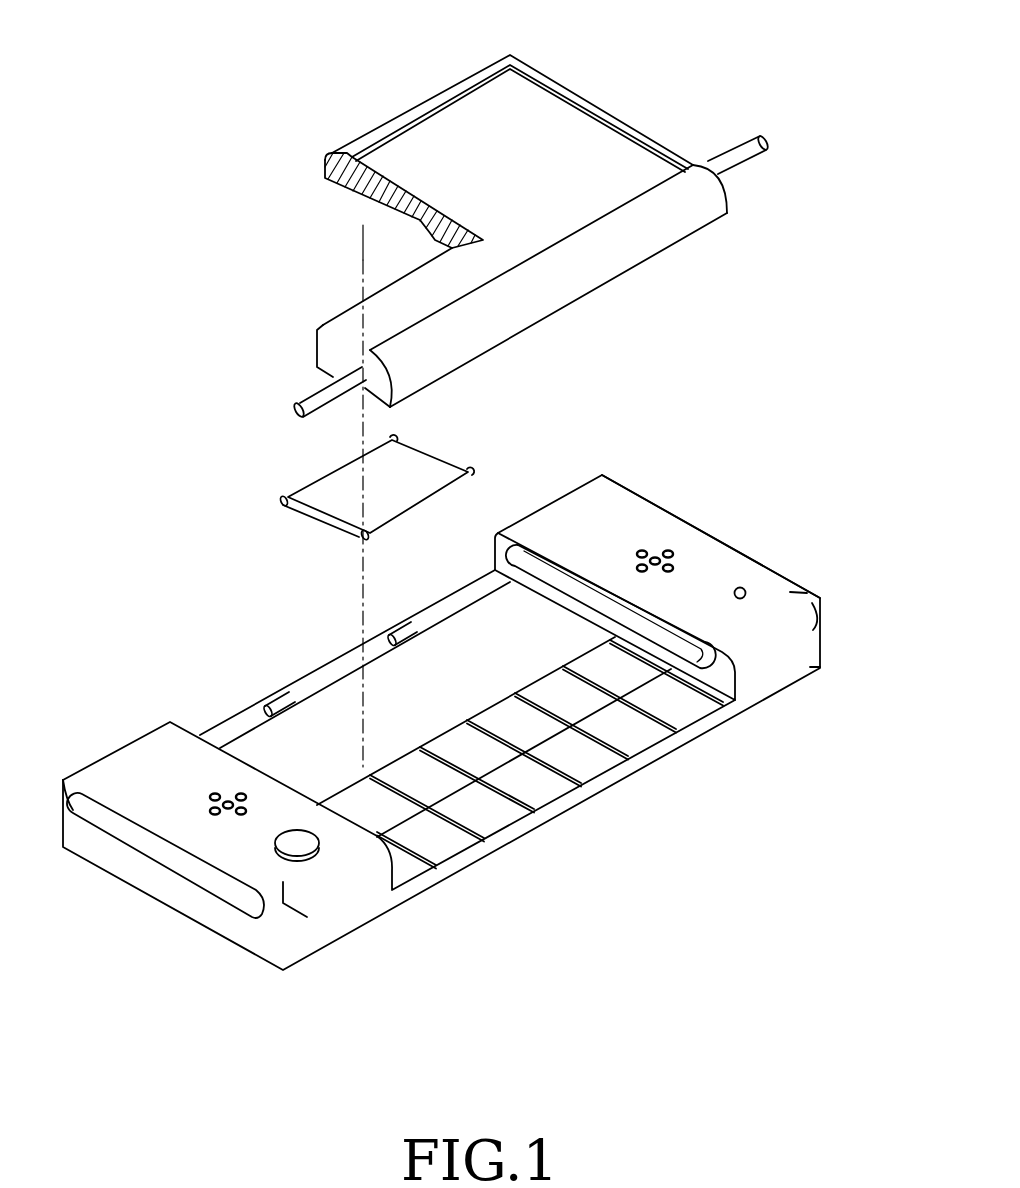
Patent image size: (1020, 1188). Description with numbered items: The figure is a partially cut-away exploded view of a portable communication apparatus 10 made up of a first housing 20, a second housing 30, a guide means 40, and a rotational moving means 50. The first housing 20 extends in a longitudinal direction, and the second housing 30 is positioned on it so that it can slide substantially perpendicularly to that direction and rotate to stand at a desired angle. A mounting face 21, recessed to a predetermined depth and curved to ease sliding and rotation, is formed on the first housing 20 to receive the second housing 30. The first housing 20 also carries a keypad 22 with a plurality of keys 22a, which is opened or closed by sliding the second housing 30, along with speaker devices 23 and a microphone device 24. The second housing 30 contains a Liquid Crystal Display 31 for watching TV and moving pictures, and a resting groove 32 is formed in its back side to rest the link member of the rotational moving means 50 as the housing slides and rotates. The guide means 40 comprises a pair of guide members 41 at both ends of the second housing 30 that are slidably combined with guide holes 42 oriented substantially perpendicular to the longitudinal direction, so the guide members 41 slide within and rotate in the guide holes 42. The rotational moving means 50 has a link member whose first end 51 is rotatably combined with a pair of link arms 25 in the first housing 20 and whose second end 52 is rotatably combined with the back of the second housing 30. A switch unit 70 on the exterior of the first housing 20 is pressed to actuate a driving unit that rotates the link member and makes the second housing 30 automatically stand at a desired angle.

The portable communication apparatus 10 is at (172, 93).
The first housing 20 is at (133, 899).
The mounting face 21 is at (265, 746).
The keypad 22 is at (418, 908).
The keys 22a is at (695, 705).
The speaker devices 23 is at (670, 552).
The microphone device 24 is at (746, 587).
The link arms 25 is at (394, 629).
The second housing 30 is at (538, 70).
The Liquid Crystal Display (LCD) 31 is at (596, 130).
The resting groove 32 is at (392, 203).
The guide means 40 is at (817, 279).
The guide members 41 is at (740, 162).
The guide holes 42 is at (570, 582).
The rotational moving means 50 is at (103, 490).
The first end of the link member 51 is at (283, 497).
The second end of the link member 52 is at (355, 535).
The switch unit 70 is at (308, 856).